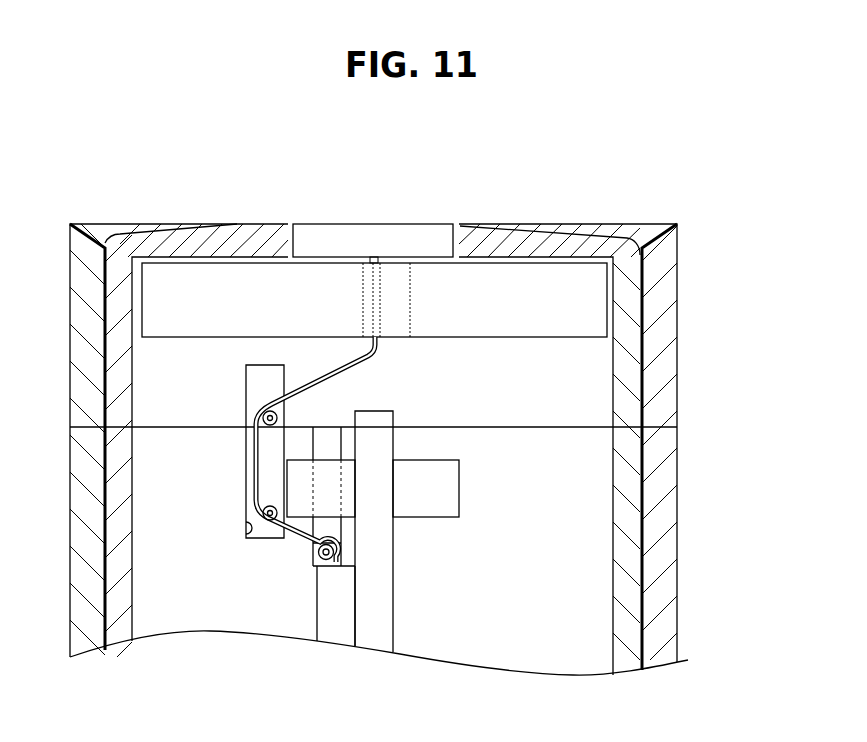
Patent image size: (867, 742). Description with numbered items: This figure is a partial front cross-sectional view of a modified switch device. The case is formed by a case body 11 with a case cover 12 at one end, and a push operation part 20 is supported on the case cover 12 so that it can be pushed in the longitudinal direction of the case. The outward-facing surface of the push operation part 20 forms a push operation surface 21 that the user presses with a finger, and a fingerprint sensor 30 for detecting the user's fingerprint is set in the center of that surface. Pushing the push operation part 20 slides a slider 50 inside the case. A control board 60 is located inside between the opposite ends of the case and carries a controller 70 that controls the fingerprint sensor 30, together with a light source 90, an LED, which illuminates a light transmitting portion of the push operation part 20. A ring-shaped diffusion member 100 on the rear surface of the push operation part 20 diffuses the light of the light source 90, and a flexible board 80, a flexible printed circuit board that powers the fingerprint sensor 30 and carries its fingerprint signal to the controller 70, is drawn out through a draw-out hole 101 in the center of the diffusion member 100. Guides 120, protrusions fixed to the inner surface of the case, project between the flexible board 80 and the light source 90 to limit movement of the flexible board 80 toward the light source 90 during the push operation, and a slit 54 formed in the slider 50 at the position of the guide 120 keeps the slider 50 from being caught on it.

The case body 11 is at (679, 567).
The case cover 12 is at (680, 351).
The push operation part 20 is at (372, 411).
The push operation surface 21 is at (556, 224).
The fingerprint sensor 30 is at (343, 224).
The slider 50 is at (628, 518).
The slit 54 is at (246, 539).
The control board 60 is at (397, 586).
The controller 70 is at (322, 606).
The flexible board 80 is at (337, 372).
The light source 90 is at (450, 496).
The diffusion member 100 is at (538, 326).
The draw-out hole 101 is at (410, 307).
The guide 120 is at (265, 416).